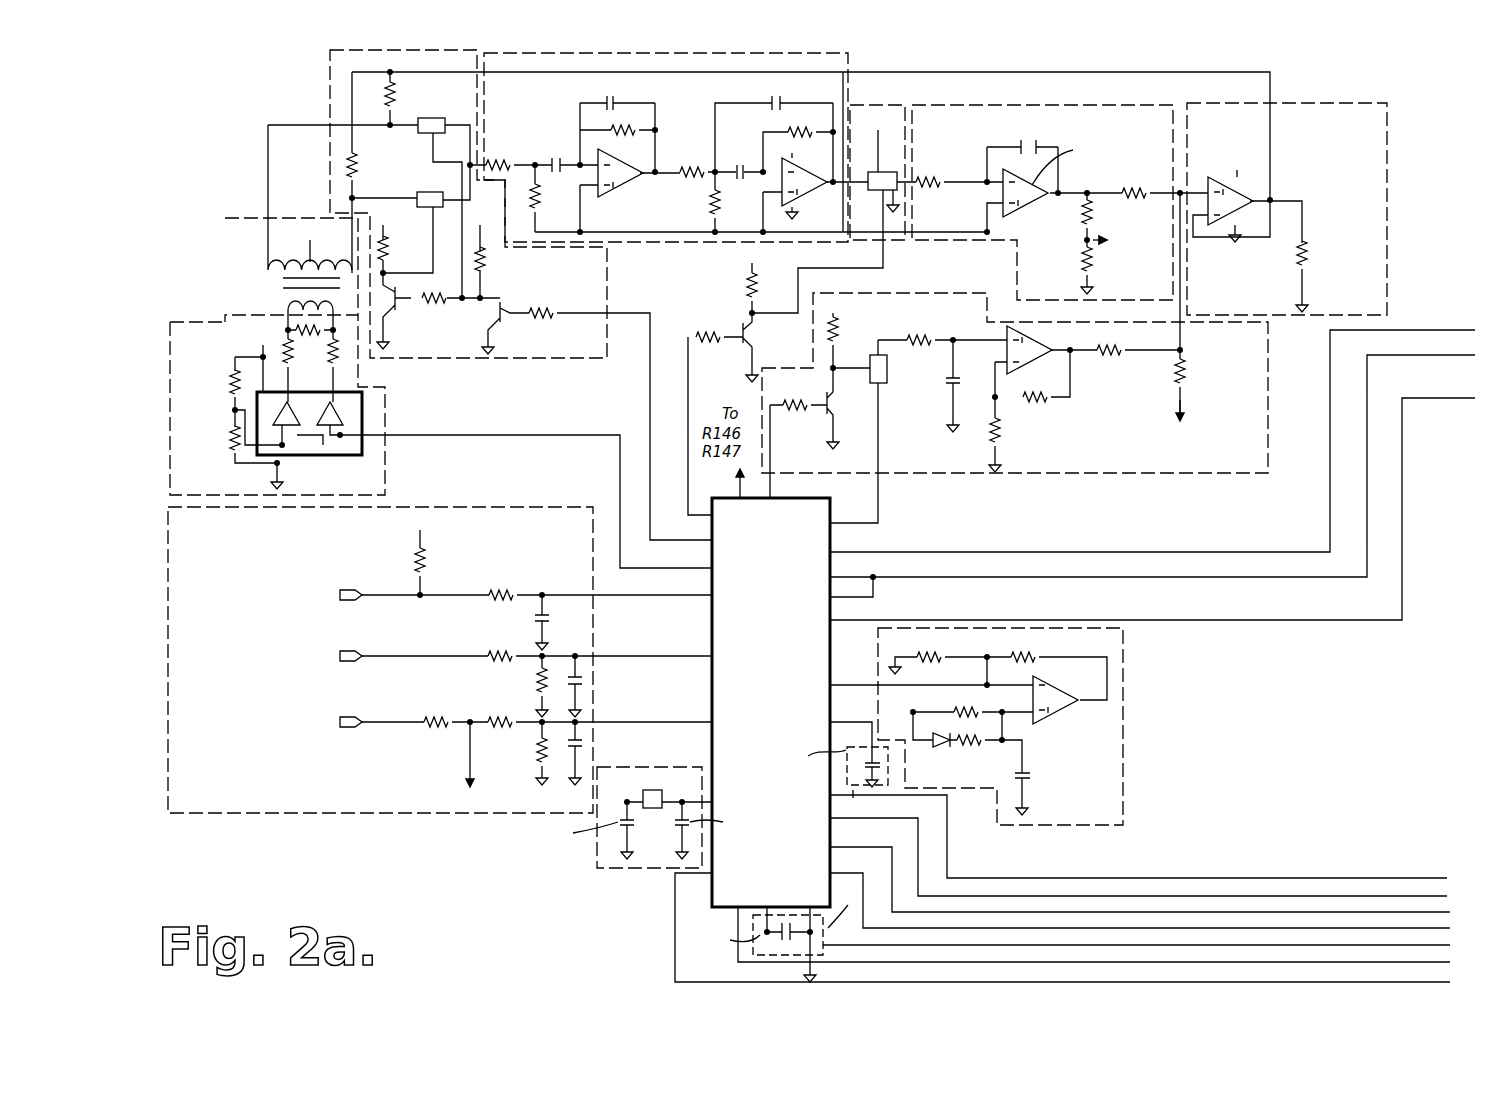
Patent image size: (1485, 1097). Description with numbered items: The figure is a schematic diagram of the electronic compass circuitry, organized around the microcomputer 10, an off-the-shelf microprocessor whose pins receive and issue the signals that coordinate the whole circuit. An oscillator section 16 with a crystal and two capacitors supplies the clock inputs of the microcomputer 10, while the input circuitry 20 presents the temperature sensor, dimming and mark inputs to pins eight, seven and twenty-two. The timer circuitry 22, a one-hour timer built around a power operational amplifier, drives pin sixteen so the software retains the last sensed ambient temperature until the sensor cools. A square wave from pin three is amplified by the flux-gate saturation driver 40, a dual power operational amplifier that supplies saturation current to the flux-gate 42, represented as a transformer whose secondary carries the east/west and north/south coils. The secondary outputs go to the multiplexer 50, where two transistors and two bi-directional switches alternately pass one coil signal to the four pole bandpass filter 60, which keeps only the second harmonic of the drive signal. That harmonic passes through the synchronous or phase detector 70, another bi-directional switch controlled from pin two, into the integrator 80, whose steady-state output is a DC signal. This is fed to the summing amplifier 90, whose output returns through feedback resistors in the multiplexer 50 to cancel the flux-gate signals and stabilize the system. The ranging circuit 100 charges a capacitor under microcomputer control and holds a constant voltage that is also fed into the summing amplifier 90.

The microcomputer 10 is at (785, 652).
The oscillator section 16 is at (592, 848).
The input circuitry section 20 is at (398, 819).
The timer circuitry 22 is at (1130, 732).
The flux-gate saturation driver 40 is at (166, 468).
The flux-gate 42 is at (222, 260).
The multiplexer 50 is at (328, 92).
The four pole bandpass filter 60 is at (846, 95).
The synchronous or phase detector 70 is at (871, 102).
The integrator 80 is at (1012, 292).
The summing amplifier 90 is at (1388, 146).
The ranging circuit 100 is at (1128, 478).